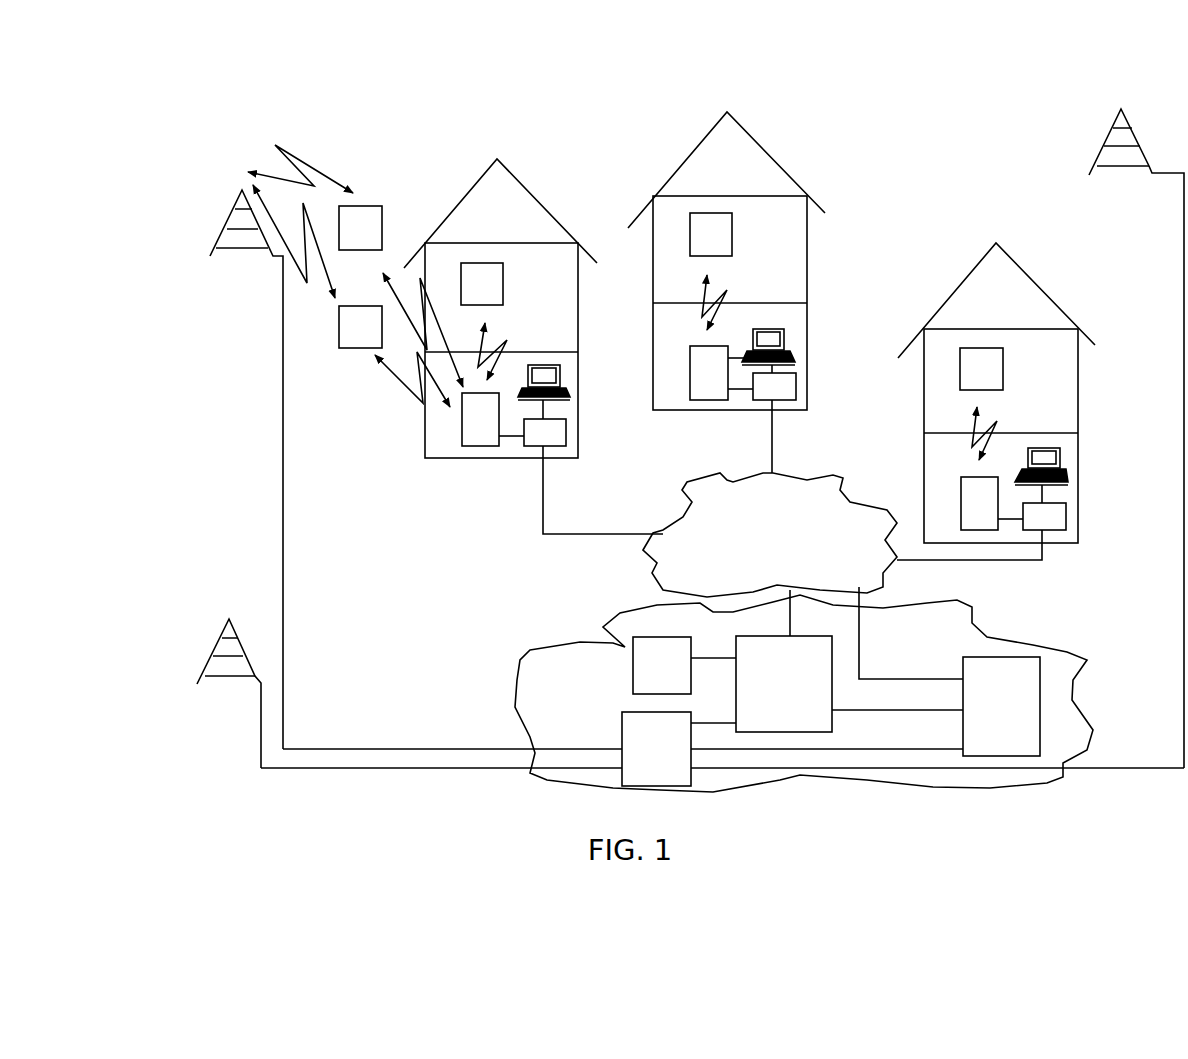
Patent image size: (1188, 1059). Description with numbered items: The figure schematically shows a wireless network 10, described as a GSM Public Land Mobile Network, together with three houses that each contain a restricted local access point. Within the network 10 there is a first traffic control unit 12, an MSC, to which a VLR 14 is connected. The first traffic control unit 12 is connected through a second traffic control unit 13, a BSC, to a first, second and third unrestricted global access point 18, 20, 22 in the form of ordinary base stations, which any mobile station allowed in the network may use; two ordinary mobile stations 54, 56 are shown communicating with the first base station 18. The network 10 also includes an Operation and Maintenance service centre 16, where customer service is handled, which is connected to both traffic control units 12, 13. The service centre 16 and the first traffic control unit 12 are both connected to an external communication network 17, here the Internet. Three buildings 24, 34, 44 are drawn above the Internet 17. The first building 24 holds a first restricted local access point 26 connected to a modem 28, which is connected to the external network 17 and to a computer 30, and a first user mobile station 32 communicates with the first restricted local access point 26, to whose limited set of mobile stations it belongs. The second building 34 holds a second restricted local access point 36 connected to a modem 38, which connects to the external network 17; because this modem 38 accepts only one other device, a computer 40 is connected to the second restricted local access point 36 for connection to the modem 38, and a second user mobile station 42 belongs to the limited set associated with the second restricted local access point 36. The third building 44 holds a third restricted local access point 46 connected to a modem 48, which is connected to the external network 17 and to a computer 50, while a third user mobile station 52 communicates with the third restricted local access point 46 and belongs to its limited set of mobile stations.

The network 10 is at (517, 693).
The first traffic control unit 12 is at (784, 684).
The second traffic control unit 13 is at (656, 749).
The VLR 14 is at (662, 665).
The Operation and Maintenance service centre 16 is at (1001, 706).
The external communication network 17 is at (770, 535).
The first unrestricted global access point 18 is at (227, 222).
The second unrestricted global access point 20 is at (215, 658).
The third unrestricted global access point 22 is at (1098, 162).
The first building 24 is at (580, 278).
The first restricted local access point 26 is at (480, 419).
The modem 28 is at (532, 434).
The computer 30 is at (543, 370).
The first user mobile station 32 is at (482, 284).
The second building 34 is at (808, 235).
The second restricted local access point 36 is at (719, 373).
The modem 38 is at (762, 388).
The computer 40 is at (772, 330).
The second user mobile station 42 is at (711, 234).
The third building 44 is at (1078, 382).
The third restricted local access point 46 is at (979, 503).
The modem 48 is at (1032, 518).
The computer 50 is at (1047, 450).
The third user mobile station 52 is at (981, 369).
The ordinary mobile station 54 is at (360, 228).
The ordinary mobile station 56 is at (360, 327).